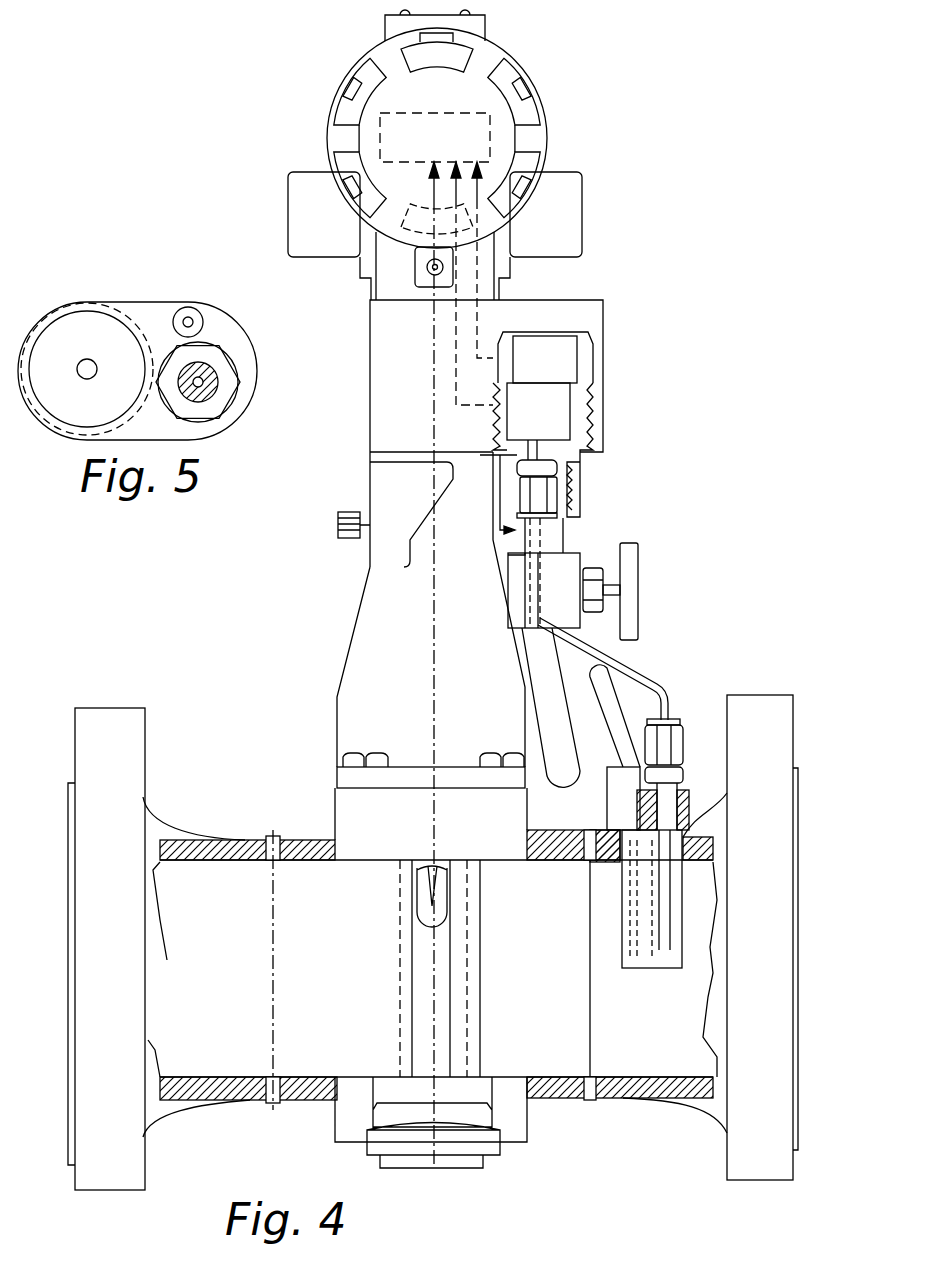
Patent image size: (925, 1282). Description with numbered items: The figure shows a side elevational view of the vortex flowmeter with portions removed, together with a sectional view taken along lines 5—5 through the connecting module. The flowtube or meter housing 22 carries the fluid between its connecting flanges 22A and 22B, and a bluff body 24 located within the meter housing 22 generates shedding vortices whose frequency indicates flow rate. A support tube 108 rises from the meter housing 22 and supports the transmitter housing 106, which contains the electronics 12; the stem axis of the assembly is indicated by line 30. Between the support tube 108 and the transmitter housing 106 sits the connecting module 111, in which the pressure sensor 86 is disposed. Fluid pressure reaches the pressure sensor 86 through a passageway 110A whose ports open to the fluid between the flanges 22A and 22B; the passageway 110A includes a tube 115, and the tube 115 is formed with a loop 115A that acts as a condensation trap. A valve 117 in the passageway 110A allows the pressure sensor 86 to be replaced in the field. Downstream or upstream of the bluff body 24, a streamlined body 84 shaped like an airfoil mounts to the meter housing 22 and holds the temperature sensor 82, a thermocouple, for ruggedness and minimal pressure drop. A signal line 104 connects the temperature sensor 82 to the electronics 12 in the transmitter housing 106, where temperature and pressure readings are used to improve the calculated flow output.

In FIG. 4, the transmitter housing 106 is at (506, 60).
In FIG. 4, the electronic circuit 12 is at (494, 119).
In FIG. 4, the connecting module 111 is at (603, 310).
In FIG. 5, the connecting module 111 is at (155, 302).
In FIG. 4, the pressure sensor 86 is at (580, 357).
In FIG. 4, the valve 117 is at (563, 555).
In FIG. 4, the tube 115 is at (570, 667).
In FIG. 4, the signal line 104 is at (630, 667).
In FIG. 4, the passageway 110A is at (636, 701).
In FIG. 4, the loop 115A is at (542, 782).
In FIG. 4, the line 30 is at (430, 612).
In FIG. 4, the support tube 108 is at (335, 696).
In FIG. 4, the meter housing 22 is at (223, 790).
In FIG. 4, the connecting flange 22A is at (100, 696).
In FIG. 4, the connecting flange 22B is at (793, 720).
In FIG. 4, the bluff body 24 is at (400, 947).
In FIG. 4, the temperature sensor 82 is at (667, 903).
In FIG. 4, the streamlined body 84 is at (683, 953).
In FIG. 4, the section line 5- 5 is at (360, 455).